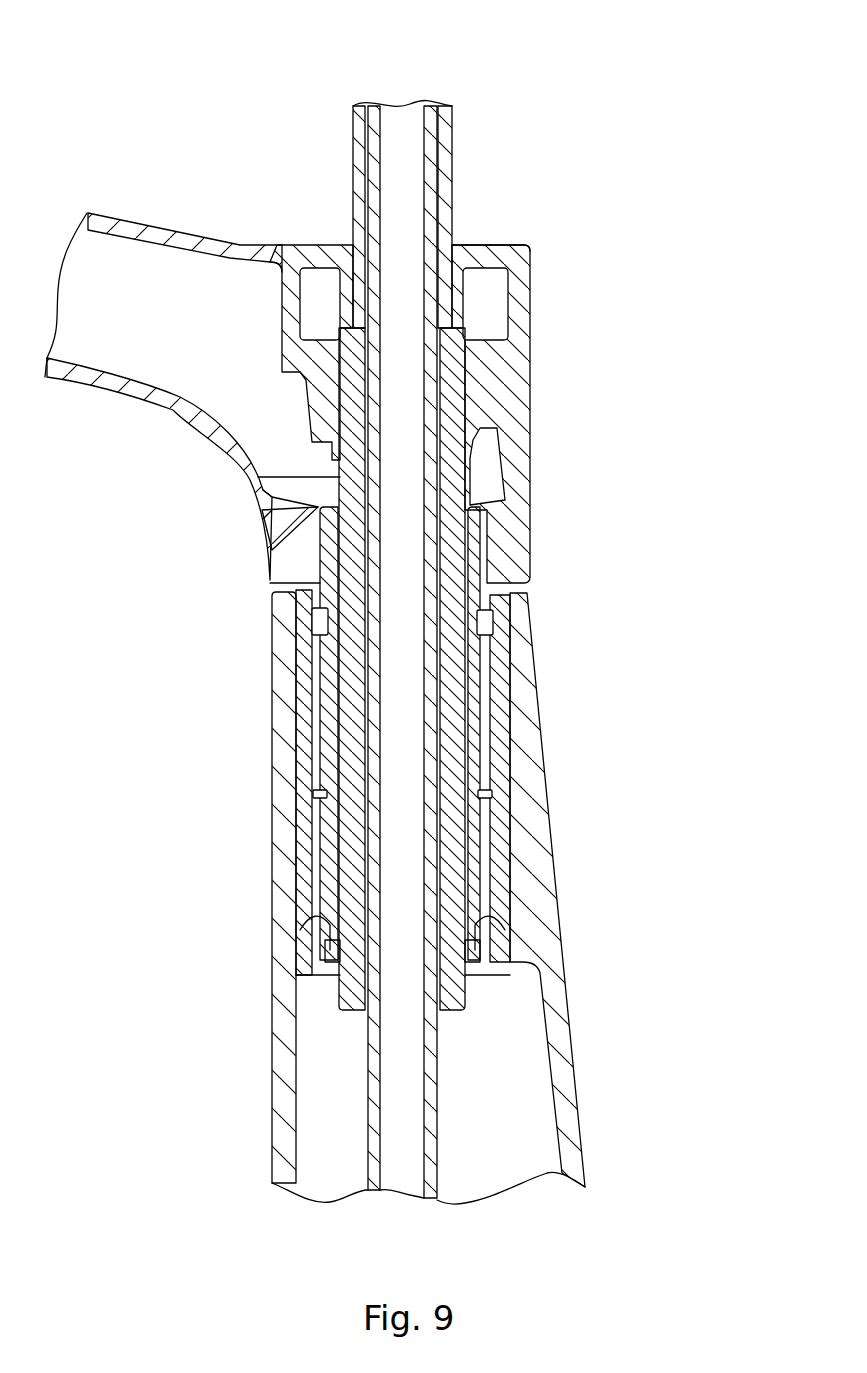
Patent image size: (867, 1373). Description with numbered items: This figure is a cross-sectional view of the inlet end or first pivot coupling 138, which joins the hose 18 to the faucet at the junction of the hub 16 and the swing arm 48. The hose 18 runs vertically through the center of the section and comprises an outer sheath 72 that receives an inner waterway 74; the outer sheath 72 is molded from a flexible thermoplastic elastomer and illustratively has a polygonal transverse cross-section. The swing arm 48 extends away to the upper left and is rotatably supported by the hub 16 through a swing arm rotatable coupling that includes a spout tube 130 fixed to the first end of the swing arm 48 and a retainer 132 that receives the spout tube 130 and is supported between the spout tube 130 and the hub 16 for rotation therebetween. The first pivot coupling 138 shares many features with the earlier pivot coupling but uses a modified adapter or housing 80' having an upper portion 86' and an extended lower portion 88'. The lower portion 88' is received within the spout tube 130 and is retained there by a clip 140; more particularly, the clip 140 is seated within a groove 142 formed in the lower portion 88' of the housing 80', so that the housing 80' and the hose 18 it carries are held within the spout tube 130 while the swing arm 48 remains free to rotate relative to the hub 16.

The hub 16 is at (585, 1110).
The hose 18 is at (338, 137).
The swing arm 48 is at (115, 210).
The outer sheath 72 is at (452, 140).
The inner waterway 74 is at (373, 105).
The housing 80' is at (457, 414).
The upper portion 86' is at (364, 251).
The lower portion 88' is at (475, 669).
The spout tube 130 is at (473, 683).
The retainer 132 is at (505, 785).
The first pivot coupling 138 is at (508, 213).
The clip 140 is at (473, 970).
The groove 142 is at (330, 962).